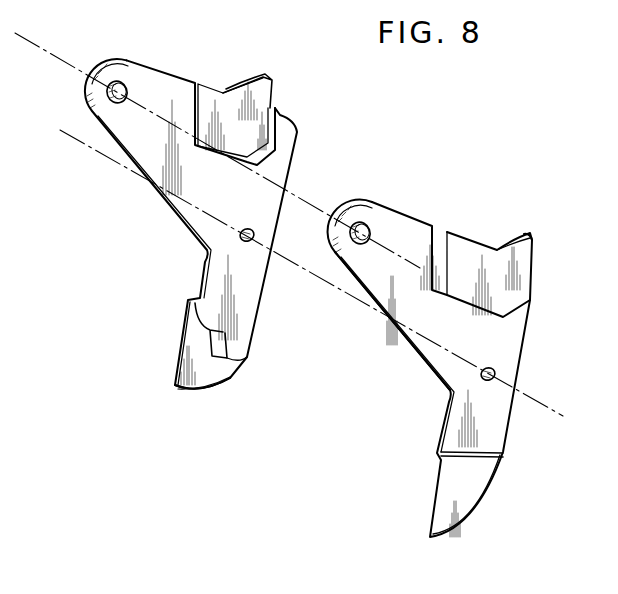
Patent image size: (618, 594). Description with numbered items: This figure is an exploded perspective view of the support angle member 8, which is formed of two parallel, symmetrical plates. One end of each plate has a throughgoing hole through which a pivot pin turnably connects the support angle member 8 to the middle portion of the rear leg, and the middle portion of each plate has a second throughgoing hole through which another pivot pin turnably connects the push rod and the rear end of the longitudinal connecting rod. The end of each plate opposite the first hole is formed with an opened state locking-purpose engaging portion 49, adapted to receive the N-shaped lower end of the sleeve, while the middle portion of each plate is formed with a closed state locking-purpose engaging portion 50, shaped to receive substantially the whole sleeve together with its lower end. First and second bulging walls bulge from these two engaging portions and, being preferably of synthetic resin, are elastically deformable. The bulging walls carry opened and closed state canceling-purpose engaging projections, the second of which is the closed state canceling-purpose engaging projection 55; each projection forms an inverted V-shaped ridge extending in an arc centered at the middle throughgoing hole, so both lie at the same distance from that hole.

The support angle member 8 is at (499, 116).
The opened state locking-purpose engaging portion 49 is at (212, 343).
The closed state locking-purpose engaging portion 50 is at (202, 117).
The closed state canceling-purpose engaging projection 55 is at (258, 76).